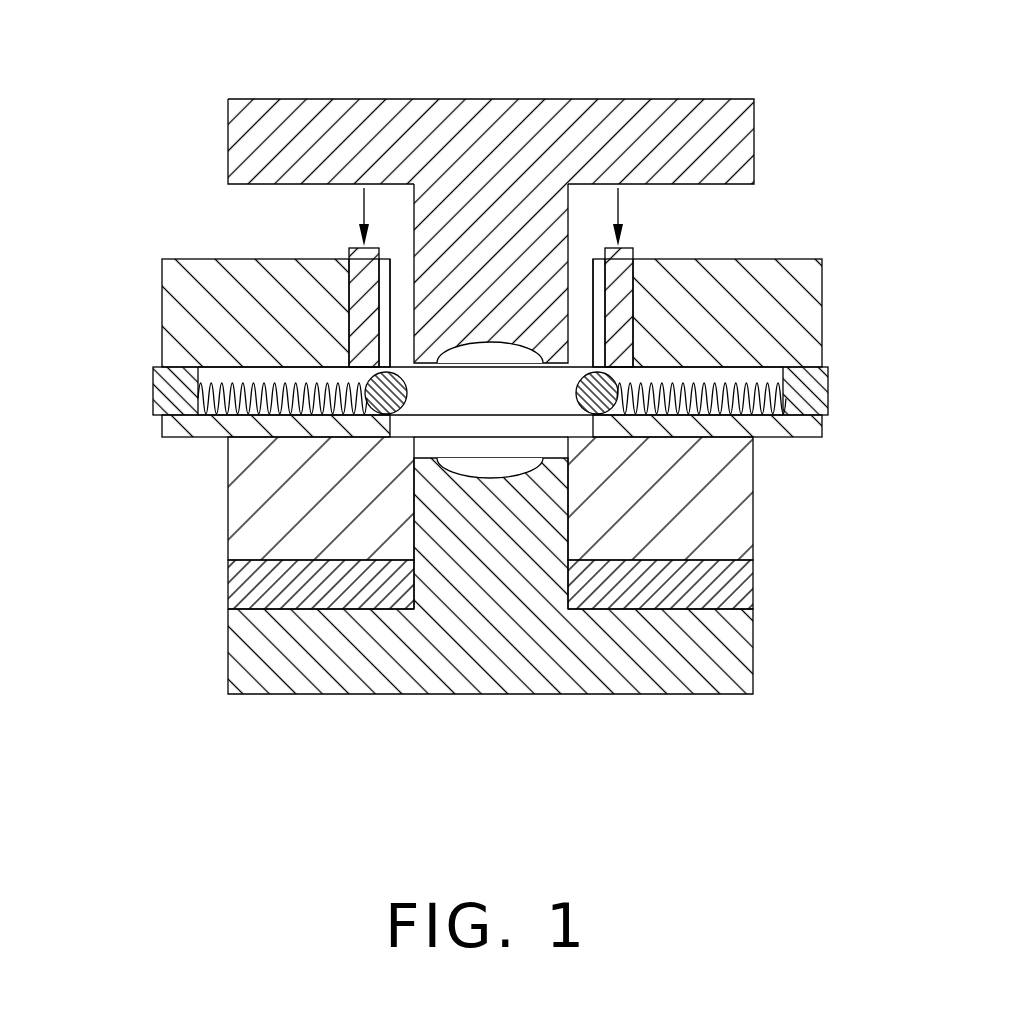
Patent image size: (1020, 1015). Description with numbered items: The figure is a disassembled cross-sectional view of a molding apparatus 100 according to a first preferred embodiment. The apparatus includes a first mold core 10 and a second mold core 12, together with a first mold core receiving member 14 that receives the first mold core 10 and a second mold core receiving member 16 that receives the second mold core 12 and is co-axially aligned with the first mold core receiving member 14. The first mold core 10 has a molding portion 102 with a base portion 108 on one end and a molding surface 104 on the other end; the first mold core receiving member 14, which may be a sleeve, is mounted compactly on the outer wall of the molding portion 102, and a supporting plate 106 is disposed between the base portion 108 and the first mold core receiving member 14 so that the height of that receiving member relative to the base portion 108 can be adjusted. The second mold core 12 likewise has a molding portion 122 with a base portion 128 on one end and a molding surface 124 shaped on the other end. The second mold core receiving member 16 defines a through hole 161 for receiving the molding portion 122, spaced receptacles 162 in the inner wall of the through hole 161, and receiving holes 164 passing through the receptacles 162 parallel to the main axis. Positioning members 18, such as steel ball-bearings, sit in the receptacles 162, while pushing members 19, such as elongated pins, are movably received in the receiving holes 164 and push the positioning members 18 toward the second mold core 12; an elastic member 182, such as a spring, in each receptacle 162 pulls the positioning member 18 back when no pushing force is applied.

The molding apparatus 100 is at (524, 41).
The second mold core 12 is at (882, 118).
The base portion 128 is at (737, 153).
The molding portion 122 is at (540, 245).
The molding surface 124 is at (474, 341).
The second mold core receiving member 16 is at (790, 343).
The receiving holes 164 is at (352, 290).
The through hole 161 is at (403, 338).
The pushing members 19 is at (620, 300).
The receptacles 162 is at (763, 377).
The elastic member 182 is at (785, 398).
The positioning members 18 is at (612, 412).
The first mold core receiving member 14 is at (730, 538).
The supporting plate 106 is at (738, 585).
The first mold core 10 is at (600, 762).
The molding portion 102 is at (500, 515).
The base portion 108 is at (640, 650).
The molding surface 104 is at (490, 480).